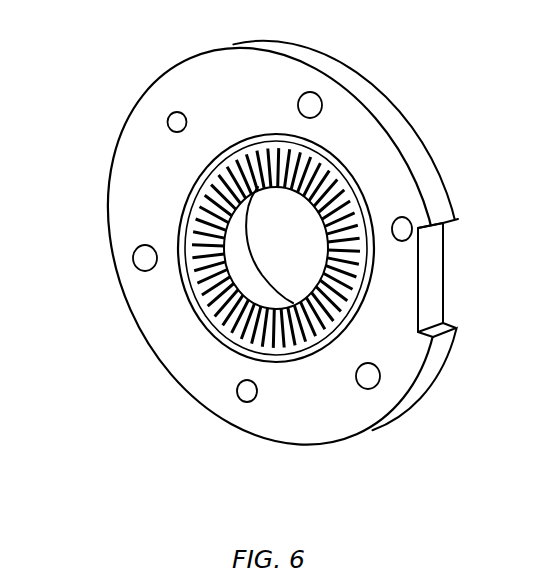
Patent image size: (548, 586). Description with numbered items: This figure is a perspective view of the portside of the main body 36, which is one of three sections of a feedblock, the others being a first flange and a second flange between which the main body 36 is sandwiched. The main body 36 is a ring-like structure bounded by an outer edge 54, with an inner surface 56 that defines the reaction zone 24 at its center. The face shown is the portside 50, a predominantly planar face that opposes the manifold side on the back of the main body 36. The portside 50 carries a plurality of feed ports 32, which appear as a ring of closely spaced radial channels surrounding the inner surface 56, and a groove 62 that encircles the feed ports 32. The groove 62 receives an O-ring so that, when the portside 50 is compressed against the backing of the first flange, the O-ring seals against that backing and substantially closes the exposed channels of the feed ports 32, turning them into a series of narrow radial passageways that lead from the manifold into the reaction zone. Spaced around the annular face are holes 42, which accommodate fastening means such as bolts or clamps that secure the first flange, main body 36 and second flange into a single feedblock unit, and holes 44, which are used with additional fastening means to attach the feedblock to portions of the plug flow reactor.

The reaction zone 24 is at (281, 277).
The feed ports 32 is at (246, 228).
The main body 36 is at (188, 343).
The holes 42 is at (168, 120).
The holes 44 is at (135, 258).
The portside 50 is at (323, 418).
The outer edge 54 is at (317, 58).
The inner surface 56 is at (250, 273).
The groove 62 is at (197, 175).